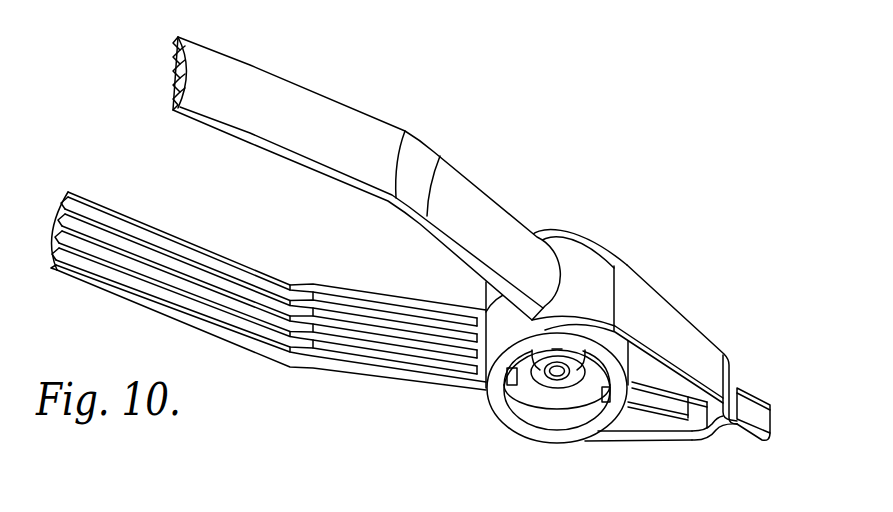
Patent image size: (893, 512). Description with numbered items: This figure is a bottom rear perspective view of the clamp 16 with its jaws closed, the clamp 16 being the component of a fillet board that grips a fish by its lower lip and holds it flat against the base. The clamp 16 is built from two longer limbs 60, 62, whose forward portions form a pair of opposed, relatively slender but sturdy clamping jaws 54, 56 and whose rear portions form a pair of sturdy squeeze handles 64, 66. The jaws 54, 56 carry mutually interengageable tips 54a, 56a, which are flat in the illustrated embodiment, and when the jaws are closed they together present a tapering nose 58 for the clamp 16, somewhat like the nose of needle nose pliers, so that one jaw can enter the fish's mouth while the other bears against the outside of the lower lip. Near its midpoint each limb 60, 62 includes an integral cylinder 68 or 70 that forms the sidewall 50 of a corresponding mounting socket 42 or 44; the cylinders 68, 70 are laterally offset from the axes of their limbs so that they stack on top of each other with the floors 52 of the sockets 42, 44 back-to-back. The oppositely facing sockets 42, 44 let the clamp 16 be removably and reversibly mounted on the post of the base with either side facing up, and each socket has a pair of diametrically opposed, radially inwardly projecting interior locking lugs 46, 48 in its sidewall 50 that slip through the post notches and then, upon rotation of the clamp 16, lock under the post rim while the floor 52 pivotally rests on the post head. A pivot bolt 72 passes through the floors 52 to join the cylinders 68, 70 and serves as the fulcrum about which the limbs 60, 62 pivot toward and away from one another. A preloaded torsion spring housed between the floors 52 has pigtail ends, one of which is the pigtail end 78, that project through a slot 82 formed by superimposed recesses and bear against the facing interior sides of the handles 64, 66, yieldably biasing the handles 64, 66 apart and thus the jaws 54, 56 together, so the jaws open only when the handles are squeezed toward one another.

The clamp 16 is at (614, 316).
The socket 42 is at (614, 338).
The socket 44 is at (530, 398).
The locking lug 46 is at (599, 400).
The locking lug 48 is at (512, 390).
The sidewall 50 is at (538, 434).
The floor 52 is at (582, 382).
The clamping jaw 54 is at (680, 446).
The tip 54a is at (748, 440).
The clamping jaw 56 is at (683, 333).
The tip 56a is at (751, 410).
The tapering nose 58 is at (744, 380).
The limb 60 is at (273, 321).
The limb 62 is at (374, 178).
The squeeze handle 64 is at (272, 348).
The squeeze handle 66 is at (318, 115).
The cylinder 68 is at (555, 231).
The cylinder 70 is at (568, 327).
The pivot bolt 72 is at (558, 376).
The pigtail end 78 is at (466, 336).
The slot 82 is at (494, 304).